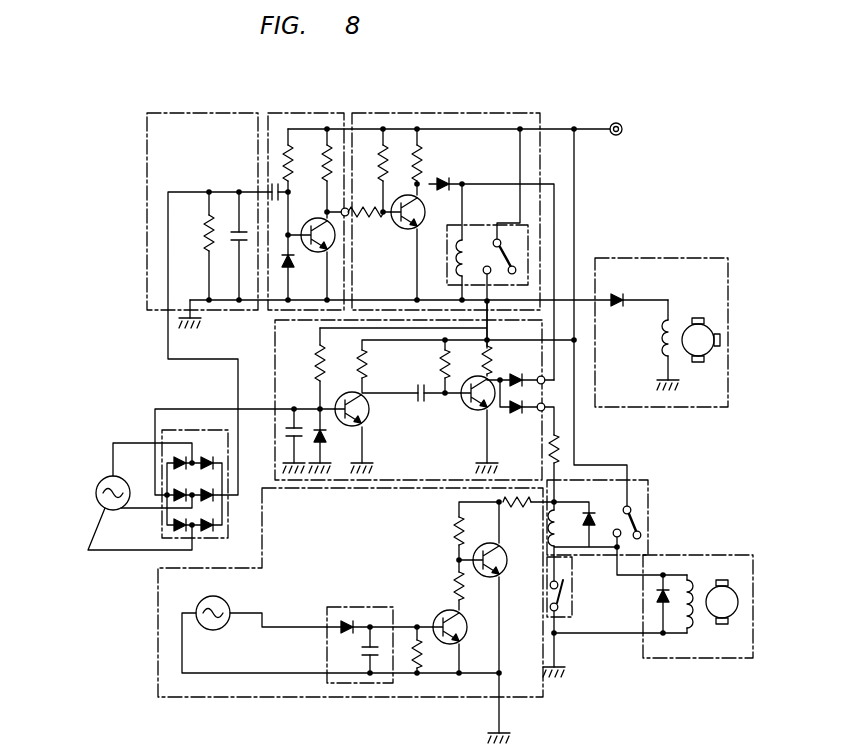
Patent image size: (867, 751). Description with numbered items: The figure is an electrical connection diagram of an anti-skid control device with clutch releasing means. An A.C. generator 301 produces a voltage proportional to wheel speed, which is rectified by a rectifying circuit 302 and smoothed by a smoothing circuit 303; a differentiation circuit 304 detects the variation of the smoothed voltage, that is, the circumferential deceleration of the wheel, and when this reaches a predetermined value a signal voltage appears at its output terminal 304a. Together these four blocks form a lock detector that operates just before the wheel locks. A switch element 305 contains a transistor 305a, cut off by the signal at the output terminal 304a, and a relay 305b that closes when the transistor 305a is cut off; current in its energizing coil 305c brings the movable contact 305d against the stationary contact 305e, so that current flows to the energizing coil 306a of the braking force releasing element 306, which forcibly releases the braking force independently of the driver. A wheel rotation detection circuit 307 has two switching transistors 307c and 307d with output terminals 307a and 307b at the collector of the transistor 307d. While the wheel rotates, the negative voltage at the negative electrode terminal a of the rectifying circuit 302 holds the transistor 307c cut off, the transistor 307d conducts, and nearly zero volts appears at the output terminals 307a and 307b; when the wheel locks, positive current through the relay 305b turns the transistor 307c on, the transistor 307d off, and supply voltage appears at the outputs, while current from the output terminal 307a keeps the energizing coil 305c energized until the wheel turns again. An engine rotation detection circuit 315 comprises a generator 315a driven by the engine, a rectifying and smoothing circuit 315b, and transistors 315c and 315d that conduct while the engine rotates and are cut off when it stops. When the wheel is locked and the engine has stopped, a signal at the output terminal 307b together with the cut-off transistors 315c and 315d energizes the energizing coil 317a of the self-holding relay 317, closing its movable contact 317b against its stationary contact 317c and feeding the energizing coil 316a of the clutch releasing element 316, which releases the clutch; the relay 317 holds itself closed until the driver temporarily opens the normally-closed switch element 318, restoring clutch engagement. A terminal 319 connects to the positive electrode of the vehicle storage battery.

The A.C. generator 301 is at (96, 493).
The rectifying circuit 302 is at (158, 466).
The negative electrode terminal a is at (164, 496).
The smoothing circuit 303 is at (232, 113).
The differentiation circuit 304 is at (338, 194).
The output terminal 304a is at (345, 216).
The switch element 305 is at (480, 229).
The transistor 305a is at (386, 213).
The relay 305b is at (514, 236).
The energizing coil 305c is at (466, 240).
The movable contact 305d is at (520, 262).
The stationary contact 305e is at (512, 280).
The braking force releasing element 306 is at (693, 332).
The energizing coil 306a is at (665, 332).
The wheel rotation detection circuit 307 is at (399, 401).
The output terminal 307a is at (545, 386).
The output terminal 307b is at (541, 413).
The transistor 307c is at (356, 422).
The transistor 307d is at (463, 400).
The engine rotation detection circuit 315 is at (356, 615).
The generator 315a is at (215, 596).
The rectifying and smoothing circuit 315b is at (327, 636).
The transistor 315c is at (447, 612).
The transistor 315d is at (506, 574).
The clutch releasing element 316 is at (699, 625).
The energizing coil 316a is at (690, 625).
The relay 317 is at (629, 572).
The energizing coil 317a is at (580, 497).
The movable contact 317b is at (640, 530).
The stationary contact 317c is at (630, 550).
The normally-closed switch element 318 is at (572, 578).
The terminal 319 is at (616, 123).